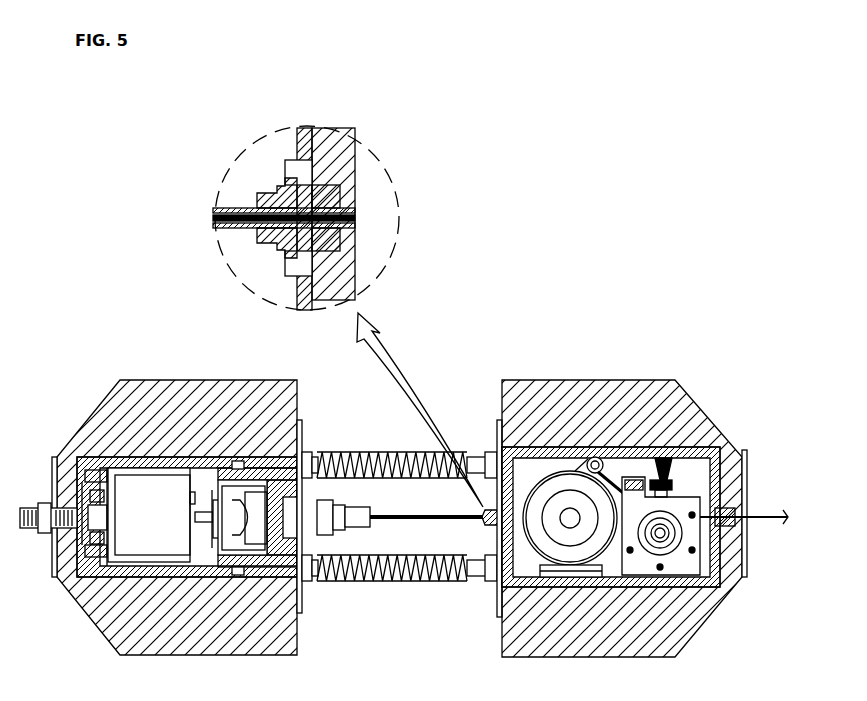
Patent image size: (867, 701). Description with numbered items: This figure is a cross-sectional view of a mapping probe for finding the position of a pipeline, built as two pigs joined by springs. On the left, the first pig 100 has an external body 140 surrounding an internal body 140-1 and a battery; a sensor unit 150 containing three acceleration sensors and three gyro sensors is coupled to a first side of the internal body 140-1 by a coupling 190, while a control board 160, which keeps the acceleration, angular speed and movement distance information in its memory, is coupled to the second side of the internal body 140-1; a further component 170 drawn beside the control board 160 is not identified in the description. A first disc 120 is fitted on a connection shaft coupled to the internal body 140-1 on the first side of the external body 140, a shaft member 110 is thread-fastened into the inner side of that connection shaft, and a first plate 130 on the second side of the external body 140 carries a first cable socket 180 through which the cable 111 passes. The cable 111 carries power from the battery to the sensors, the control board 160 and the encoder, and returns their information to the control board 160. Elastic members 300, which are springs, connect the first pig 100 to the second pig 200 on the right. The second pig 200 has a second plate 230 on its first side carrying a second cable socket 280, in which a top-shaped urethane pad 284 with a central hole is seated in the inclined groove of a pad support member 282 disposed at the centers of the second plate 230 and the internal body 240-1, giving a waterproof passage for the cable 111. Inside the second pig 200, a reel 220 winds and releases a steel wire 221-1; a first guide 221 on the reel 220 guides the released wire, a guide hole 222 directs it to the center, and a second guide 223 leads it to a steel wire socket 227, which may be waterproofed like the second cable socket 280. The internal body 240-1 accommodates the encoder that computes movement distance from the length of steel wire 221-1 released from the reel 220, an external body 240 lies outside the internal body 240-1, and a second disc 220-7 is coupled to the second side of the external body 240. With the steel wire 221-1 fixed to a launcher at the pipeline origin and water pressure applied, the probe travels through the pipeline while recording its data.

The first pig 100 is at (181, 501).
The shaft member 110 is at (26, 508).
The cable 111 is at (403, 521).
The first disc 120 is at (54, 560).
The first plate 130 is at (303, 432).
The external body 140 is at (197, 385).
The internal body 140-1 is at (125, 580).
The sensor unit 150 is at (151, 505).
The control board 160 is at (215, 547).
The gear/transmission unit 170 is at (280, 542).
The first cable socket 180 is at (344, 500).
The coupling 190 is at (92, 490).
The second pig 200 is at (653, 499).
The reel 220 is at (541, 470).
The second disc 220-7 is at (747, 475).
The first guide 221 is at (593, 456).
The steel wire 221-1 is at (764, 516).
The guide hole 222 is at (634, 482).
The second guide 223 is at (673, 545).
The steel wire socket 227 is at (730, 530).
The second plate 230 is at (497, 600).
The external body 240 is at (690, 626).
The internal body of the second pig 240-1 is at (597, 590).
The second cable socket 280 is at (297, 218).
The pad support member 282 is at (266, 250).
The urethane pad 284 is at (333, 204).
The elastic members 300 is at (396, 592).